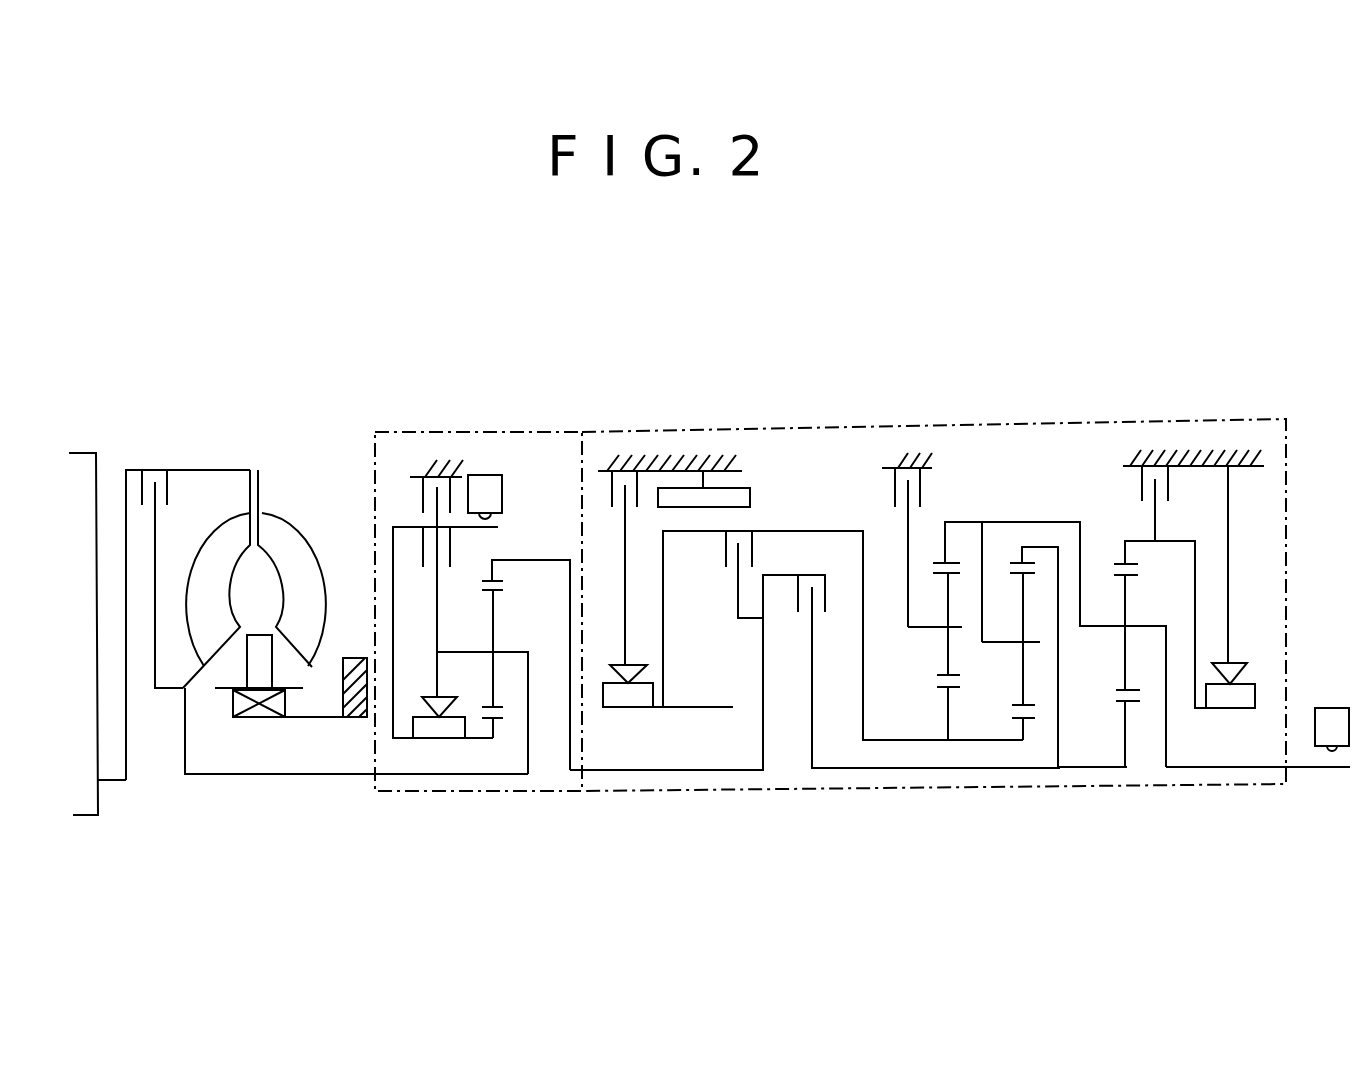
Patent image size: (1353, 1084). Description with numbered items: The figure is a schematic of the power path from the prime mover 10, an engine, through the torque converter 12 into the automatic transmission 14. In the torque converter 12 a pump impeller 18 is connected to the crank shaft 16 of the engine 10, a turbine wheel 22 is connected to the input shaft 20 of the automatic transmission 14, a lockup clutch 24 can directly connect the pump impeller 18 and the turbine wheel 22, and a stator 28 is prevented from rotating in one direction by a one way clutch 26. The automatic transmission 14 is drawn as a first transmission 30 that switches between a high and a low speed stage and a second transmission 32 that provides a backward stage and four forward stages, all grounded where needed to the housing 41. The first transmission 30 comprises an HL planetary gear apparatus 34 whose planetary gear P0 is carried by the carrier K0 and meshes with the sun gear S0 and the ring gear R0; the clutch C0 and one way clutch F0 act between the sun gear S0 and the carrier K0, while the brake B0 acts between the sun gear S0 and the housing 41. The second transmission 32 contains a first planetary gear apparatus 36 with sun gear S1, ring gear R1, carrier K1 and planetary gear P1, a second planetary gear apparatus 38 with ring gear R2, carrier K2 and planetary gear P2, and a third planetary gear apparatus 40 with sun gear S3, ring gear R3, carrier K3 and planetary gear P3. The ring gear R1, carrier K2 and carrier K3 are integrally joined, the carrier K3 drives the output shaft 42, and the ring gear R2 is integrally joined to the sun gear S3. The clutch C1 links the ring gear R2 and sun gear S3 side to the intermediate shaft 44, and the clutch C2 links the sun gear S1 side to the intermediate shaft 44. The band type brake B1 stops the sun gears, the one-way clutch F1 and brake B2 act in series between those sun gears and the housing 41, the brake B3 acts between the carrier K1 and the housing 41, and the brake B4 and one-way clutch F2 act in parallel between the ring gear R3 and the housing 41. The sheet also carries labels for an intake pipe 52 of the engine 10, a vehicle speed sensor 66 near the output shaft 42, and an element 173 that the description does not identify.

The prime mover 10 is at (83, 472).
The torque converter 12 is at (309, 428).
The automatic transmission 14 is at (849, 397).
The crank shaft 16 is at (113, 779).
The pump impeller 18 is at (300, 558).
The input shaft 20 is at (247, 776).
The turbine wheel 22 is at (227, 540).
The lockup clutch 24 is at (142, 490).
The one way clutch 26 is at (260, 715).
The stator 28 is at (247, 660).
The first transmission 30 is at (478, 432).
The second transmission 32 is at (1060, 422).
The HL planetary gear apparatus 34 is at (491, 769).
The first planetary gear apparatus 36 is at (938, 770).
The second planetary gear apparatus 38 is at (1041, 765).
The third planetary gear apparatus 40 is at (1154, 782).
The housing 41 is at (355, 710).
The output shaft 42 is at (1270, 768).
The intermediate shaft 44 is at (750, 771).
The intake pipe 52 is at (1012, 722).
The vehicle speed sensor 66 is at (1330, 723).
The lock-up clutch control device 173 is at (488, 495).
The brake B0 is at (422, 495).
The band type brake B1 is at (745, 485).
The brake B2 is at (610, 497).
The brake B3 is at (893, 488).
The brake B4 is at (1170, 481).
The clutch C0 is at (423, 553).
The clutch C1 is at (825, 593).
The clutch C2 is at (725, 552).
The one way clutch F0 is at (438, 733).
The one-way clutch F1 is at (631, 703).
The one-way clutch F2 is at (1236, 697).
The carrier K0 is at (512, 651).
The carrier K1 is at (930, 630).
The carrier K2 is at (997, 643).
The carrier K3 is at (1144, 626).
The planetary gear P0 is at (485, 594).
The planetary gear P1 is at (942, 575).
The planetary gear P2 is at (1012, 707).
The planetary gear P3 is at (1116, 691).
The ring gear R0 is at (482, 580).
The ring gear R1 is at (958, 560).
The ring gear R2 is at (1013, 560).
The ring gear R3 is at (1116, 565).
The sun gear S0 is at (480, 721).
The sun gear S1 is at (942, 690).
The sun gear S3 is at (1116, 706).